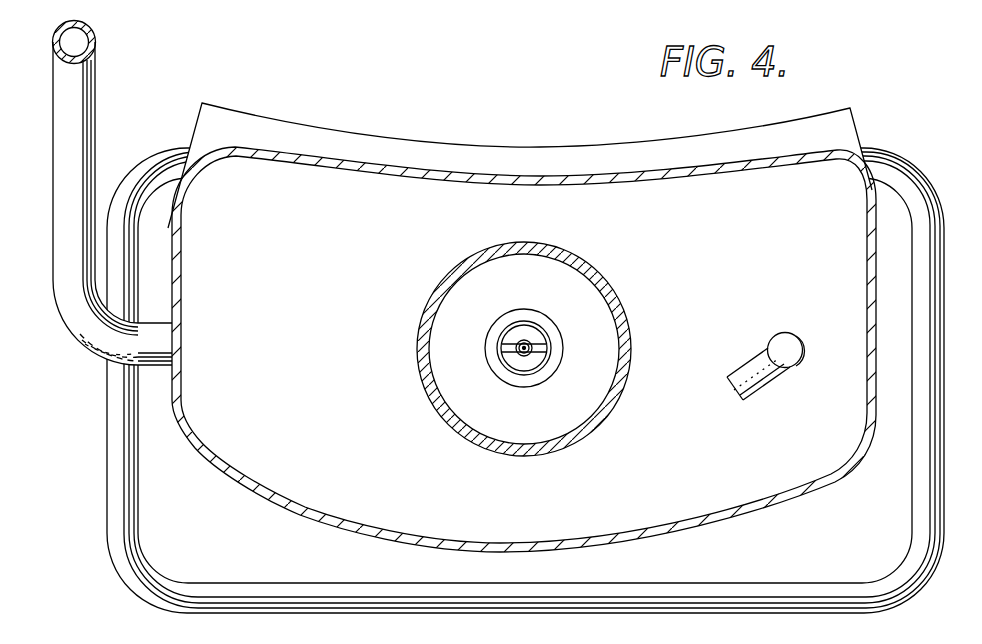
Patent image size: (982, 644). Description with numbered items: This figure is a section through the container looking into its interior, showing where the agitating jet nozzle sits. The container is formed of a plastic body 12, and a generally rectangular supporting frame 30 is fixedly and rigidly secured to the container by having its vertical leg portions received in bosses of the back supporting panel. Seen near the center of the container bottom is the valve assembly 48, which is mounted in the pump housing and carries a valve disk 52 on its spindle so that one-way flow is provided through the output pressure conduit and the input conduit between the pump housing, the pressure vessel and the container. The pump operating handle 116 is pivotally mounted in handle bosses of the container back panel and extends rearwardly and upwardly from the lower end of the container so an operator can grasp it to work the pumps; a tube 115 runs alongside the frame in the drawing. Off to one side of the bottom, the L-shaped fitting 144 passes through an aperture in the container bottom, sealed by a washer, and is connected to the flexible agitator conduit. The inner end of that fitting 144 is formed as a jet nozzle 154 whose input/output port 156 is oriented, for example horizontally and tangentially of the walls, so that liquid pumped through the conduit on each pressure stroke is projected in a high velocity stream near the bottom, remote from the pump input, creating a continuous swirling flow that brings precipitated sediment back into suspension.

The plastic body 12 is at (778, 505).
The supporting frame 30 is at (200, 582).
The valve assembly 48 is at (506, 311).
The valve disk 52 is at (580, 264).
The tube 115 is at (90, 88).
The pump operating handle 116 is at (100, 358).
The L-shaped fitting 144 is at (793, 330).
The jet nozzle 154 is at (751, 364).
The input/output port 156 is at (734, 392).